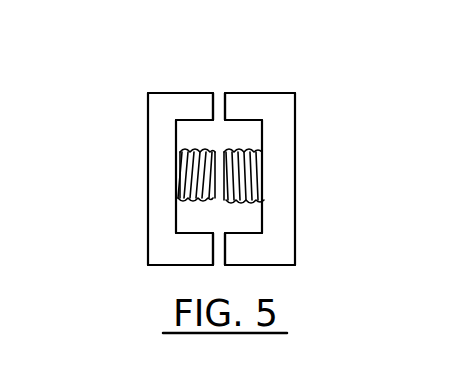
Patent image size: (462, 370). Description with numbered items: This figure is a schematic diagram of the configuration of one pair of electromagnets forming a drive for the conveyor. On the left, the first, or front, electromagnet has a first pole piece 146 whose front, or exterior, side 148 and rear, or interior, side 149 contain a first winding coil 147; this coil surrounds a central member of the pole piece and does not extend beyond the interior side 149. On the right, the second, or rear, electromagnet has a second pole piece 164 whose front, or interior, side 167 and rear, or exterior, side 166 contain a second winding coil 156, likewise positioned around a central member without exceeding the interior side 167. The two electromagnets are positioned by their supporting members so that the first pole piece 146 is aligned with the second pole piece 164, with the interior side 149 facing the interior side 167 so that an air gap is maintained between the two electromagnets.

The first pole piece 146 is at (162, 198).
The first winding coil 147 is at (197, 203).
The front side of first pole piece 148 is at (175, 135).
The rear side of first pole piece 149 is at (185, 110).
The second winding coil 156 is at (257, 165).
The second pole piece 164 is at (278, 213).
The rear side of second pole piece 166 is at (282, 138).
The front side of second pole piece 167 is at (235, 108).